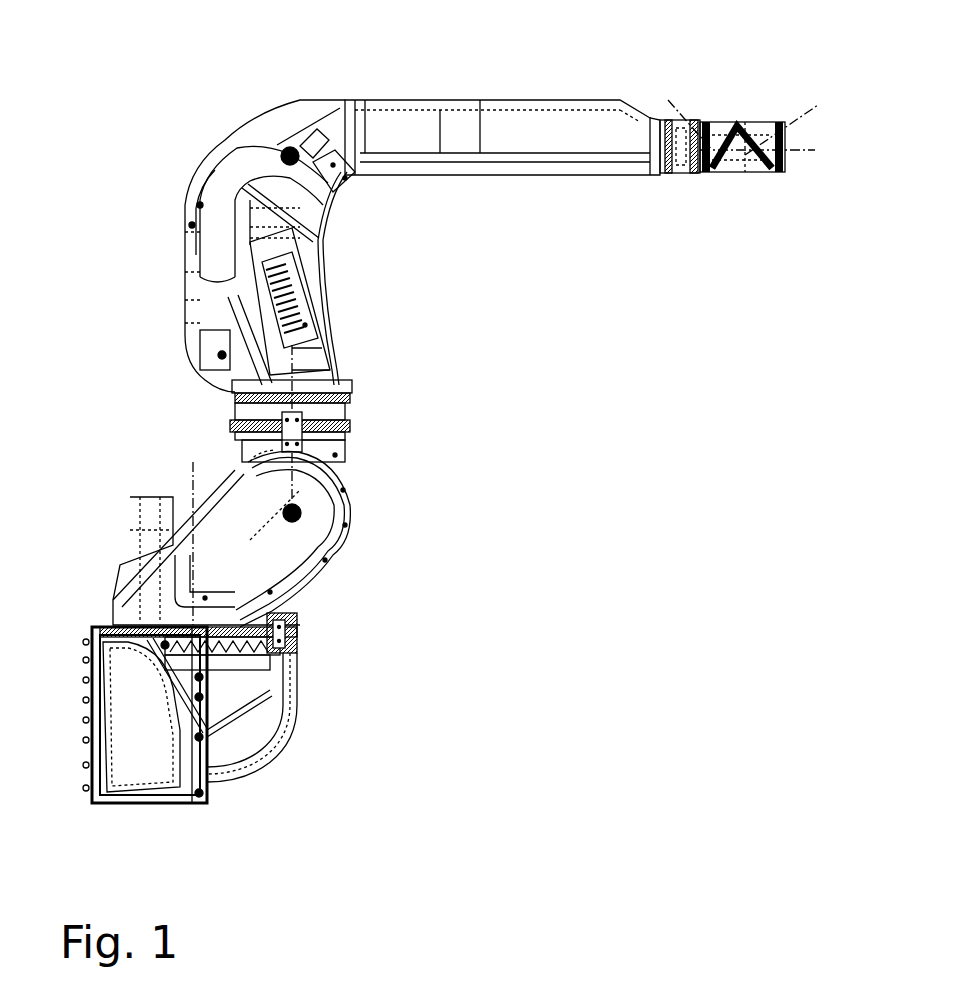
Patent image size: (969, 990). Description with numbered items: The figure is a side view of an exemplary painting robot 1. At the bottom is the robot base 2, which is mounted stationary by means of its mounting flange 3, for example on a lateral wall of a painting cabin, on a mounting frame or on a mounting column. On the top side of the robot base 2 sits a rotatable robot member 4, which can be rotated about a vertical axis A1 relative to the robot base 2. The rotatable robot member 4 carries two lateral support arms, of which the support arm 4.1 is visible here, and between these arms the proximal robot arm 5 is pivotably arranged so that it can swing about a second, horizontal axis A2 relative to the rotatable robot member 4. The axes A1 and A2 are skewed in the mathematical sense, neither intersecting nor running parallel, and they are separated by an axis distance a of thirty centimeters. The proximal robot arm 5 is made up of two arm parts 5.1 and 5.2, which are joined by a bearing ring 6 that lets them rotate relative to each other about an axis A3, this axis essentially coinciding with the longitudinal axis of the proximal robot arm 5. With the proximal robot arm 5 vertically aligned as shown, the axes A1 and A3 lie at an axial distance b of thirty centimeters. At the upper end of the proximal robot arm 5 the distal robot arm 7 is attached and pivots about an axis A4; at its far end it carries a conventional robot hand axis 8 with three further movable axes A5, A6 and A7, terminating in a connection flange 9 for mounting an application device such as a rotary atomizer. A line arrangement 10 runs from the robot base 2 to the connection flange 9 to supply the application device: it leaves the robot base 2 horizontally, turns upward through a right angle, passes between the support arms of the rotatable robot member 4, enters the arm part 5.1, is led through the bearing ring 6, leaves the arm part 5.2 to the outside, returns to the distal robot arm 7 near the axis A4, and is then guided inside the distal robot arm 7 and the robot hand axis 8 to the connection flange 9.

The painting robot 1 is at (438, 765).
The robot base 2 is at (150, 770).
The mounting flange 3 is at (90, 742).
The rotatable robot member 4 is at (105, 555).
The lateral support arm 4.1 is at (265, 556).
The proximal robot arm 5 is at (193, 386).
The arm part 5.1 is at (352, 462).
The arm part 5.2 is at (343, 272).
The bearing ring 6 is at (350, 412).
The distal robot arm 7 is at (530, 132).
The robot hand axis 8 is at (735, 176).
The connection flange 9 is at (785, 176).
The line arrangement 10 is at (235, 180).
The vertical axis A1 is at (190, 466).
The horizontal axis A2 is at (300, 516).
The axis A3 is at (312, 336).
The axis A4 is at (287, 150).
The movable axis A5 is at (670, 103).
The movable axis A6 is at (812, 110).
The movable axis A7 is at (813, 150).
The axis distance a is at (283, 513).
The axial distance b is at (290, 483).